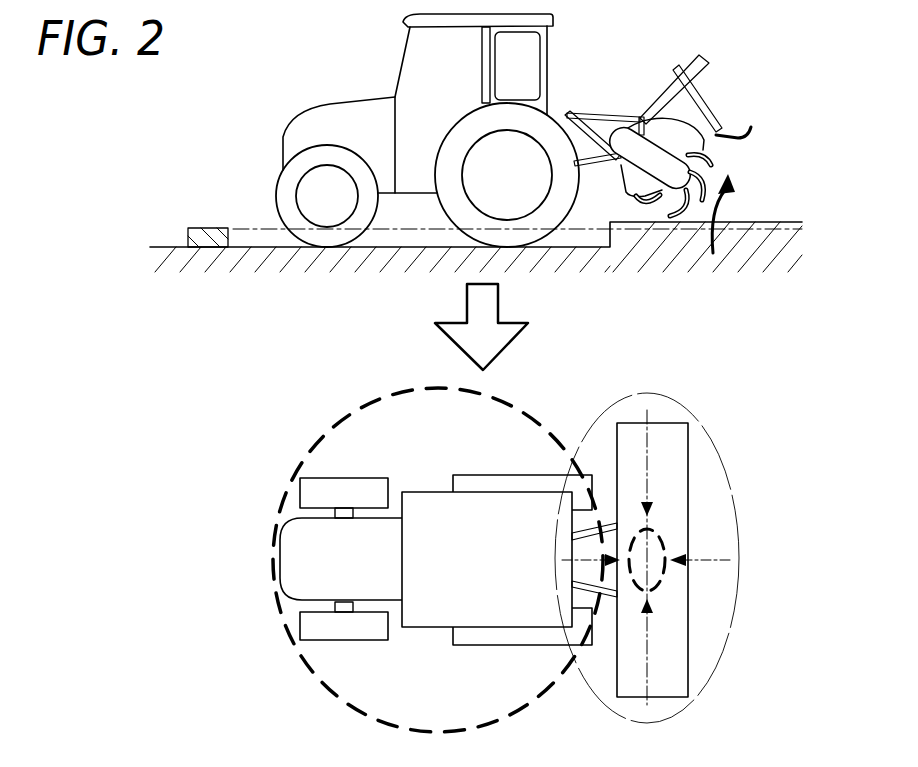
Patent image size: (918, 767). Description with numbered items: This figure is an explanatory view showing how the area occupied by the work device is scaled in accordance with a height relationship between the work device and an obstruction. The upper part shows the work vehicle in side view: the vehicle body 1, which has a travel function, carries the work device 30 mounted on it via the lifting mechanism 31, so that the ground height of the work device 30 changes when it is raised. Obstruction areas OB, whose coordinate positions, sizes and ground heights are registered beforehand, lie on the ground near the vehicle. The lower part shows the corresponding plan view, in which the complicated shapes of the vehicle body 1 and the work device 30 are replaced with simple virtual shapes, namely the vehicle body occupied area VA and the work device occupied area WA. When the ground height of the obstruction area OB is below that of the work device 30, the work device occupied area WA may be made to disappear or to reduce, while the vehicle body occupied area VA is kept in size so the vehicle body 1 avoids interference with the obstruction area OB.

The vehicle body 1 is at (347, 92).
The work device 30 is at (722, 84).
The lifting mechanism 31 is at (604, 119).
The obstruction area OB is at (188, 240).
The vehicle body occupied area VA is at (295, 458).
The work device occupied area WA is at (660, 533).